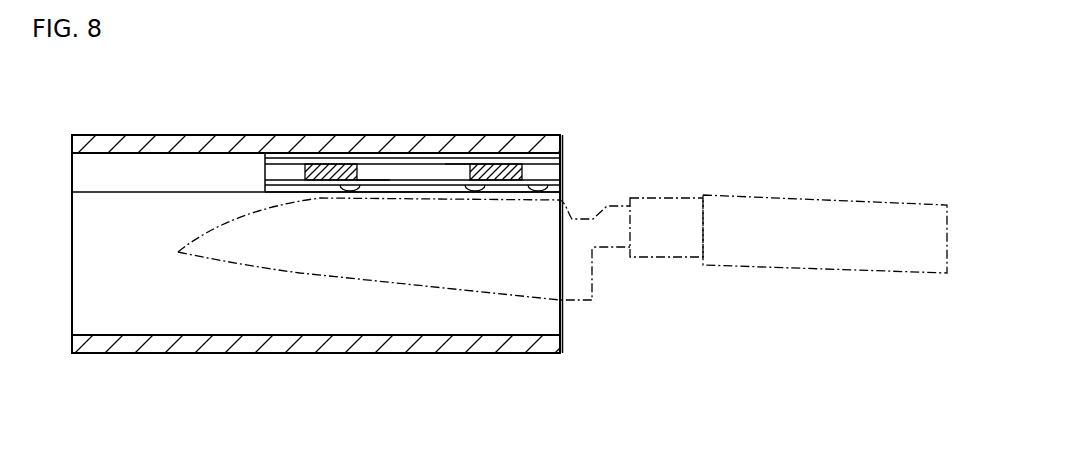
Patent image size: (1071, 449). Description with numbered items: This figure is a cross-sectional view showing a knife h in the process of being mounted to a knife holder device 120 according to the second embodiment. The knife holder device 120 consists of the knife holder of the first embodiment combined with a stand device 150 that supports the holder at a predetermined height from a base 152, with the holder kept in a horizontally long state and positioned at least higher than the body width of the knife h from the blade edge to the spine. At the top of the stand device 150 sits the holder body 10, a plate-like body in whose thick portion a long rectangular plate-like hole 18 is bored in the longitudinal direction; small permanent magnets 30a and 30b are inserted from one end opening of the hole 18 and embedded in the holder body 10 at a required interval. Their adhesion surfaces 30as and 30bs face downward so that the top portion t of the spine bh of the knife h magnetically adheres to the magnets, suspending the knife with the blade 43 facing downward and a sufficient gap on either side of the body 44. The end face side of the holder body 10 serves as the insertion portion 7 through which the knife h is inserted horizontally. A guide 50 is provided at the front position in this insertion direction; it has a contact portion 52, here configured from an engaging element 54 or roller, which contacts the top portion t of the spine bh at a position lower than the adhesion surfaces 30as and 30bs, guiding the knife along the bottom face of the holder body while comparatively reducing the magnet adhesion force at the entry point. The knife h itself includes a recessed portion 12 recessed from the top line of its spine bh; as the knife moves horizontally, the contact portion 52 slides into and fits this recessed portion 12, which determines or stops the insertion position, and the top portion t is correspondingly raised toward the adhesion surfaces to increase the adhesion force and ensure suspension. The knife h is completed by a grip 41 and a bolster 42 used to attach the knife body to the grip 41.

The knife holder device 120 is at (589, 99).
The stand device 150 is at (104, 135).
The base 152 is at (521, 354).
The holder body 10 is at (280, 158).
The hole 18 is at (563, 163).
The guide 50 is at (443, 166).
The permanent magnet 30b is at (333, 170).
The adhesion surface 30bs is at (373, 178).
The permanent magnet 30a is at (500, 163).
The adhesion surface 30as is at (463, 170).
The insertion portion 7 is at (575, 187).
The top portion t is at (385, 197).
The spine bh is at (430, 202).
The contact portion 52 is at (505, 236).
The engaging element 54 is at (548, 192).
The recessed portion 12 is at (592, 204).
The knife h is at (562, 227).
The body 44 is at (442, 236).
The blade 43 is at (315, 277).
The bolster 42 is at (677, 257).
The grip 41 is at (793, 213).